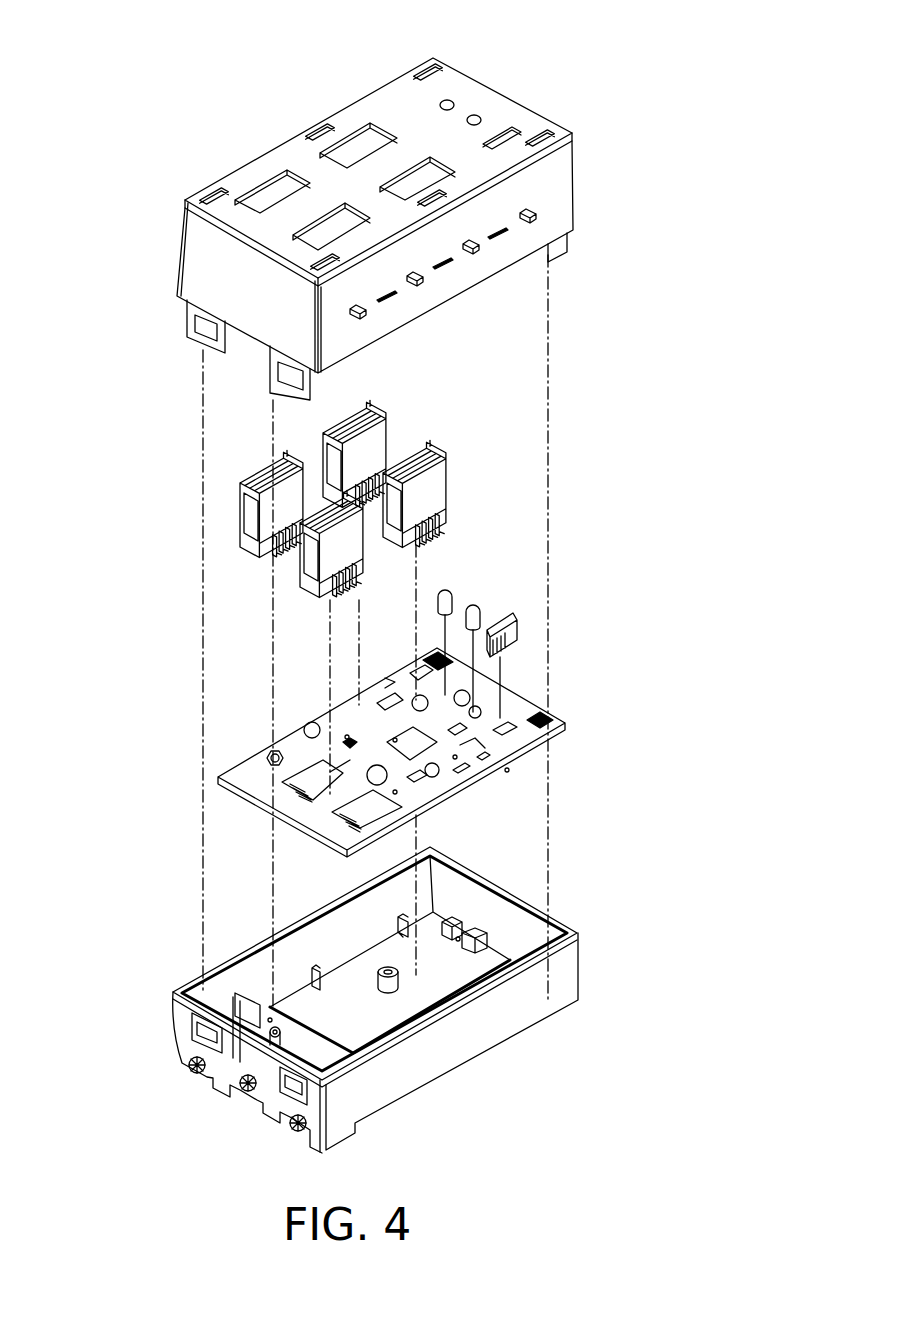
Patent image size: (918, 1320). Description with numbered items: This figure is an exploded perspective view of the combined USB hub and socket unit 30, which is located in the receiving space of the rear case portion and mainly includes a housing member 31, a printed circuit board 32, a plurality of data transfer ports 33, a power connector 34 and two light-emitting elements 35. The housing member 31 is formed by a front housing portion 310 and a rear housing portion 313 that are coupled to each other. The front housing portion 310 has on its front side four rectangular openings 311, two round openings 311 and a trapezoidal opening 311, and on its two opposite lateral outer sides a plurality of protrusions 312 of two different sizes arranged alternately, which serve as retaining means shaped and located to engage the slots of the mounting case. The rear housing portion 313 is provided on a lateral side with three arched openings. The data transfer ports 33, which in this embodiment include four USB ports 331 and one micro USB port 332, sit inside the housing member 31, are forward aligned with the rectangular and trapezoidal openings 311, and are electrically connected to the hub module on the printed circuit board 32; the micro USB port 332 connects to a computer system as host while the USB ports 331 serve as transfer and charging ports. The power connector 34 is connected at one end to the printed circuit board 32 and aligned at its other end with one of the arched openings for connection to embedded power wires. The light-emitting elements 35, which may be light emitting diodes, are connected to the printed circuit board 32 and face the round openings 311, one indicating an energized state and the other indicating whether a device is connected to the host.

The combined USB hub and socket unit 30 is at (110, 294).
The housing member 31 is at (450, 62).
The front housing portion 310 is at (398, 115).
The openings 311 is at (507, 130).
The protrusions 312 is at (540, 210).
The rear housing portion 313 is at (552, 984).
The printed circuit board 32 is at (218, 765).
The data transfer ports 33 is at (218, 497).
The USB ports 331 is at (240, 528).
The micro USB port 332 is at (517, 640).
The power connector 34 is at (268, 1028).
The light-emitting elements 35 is at (455, 592).